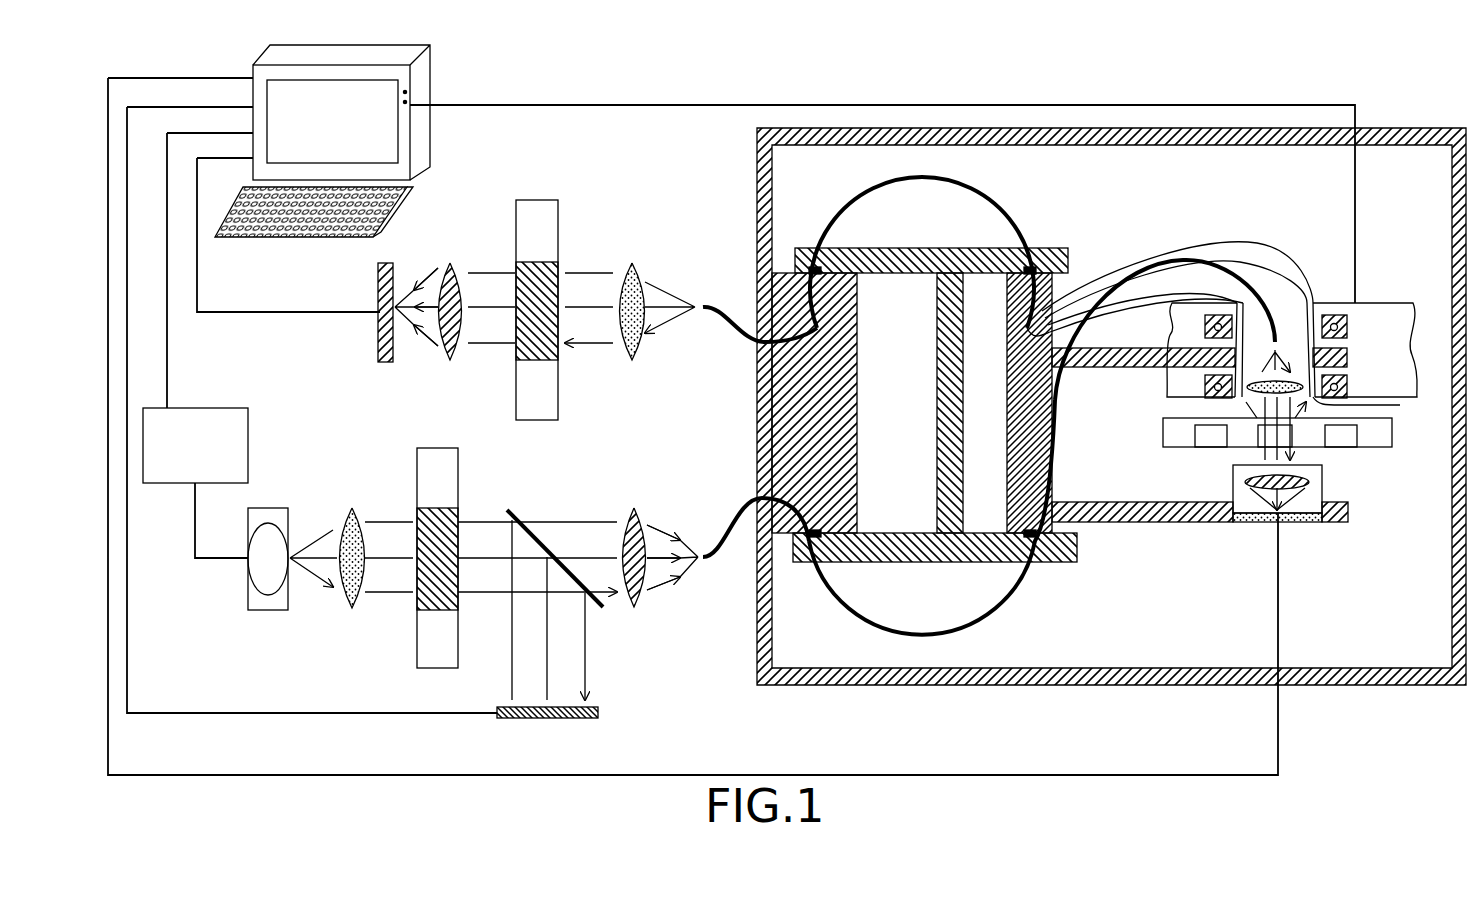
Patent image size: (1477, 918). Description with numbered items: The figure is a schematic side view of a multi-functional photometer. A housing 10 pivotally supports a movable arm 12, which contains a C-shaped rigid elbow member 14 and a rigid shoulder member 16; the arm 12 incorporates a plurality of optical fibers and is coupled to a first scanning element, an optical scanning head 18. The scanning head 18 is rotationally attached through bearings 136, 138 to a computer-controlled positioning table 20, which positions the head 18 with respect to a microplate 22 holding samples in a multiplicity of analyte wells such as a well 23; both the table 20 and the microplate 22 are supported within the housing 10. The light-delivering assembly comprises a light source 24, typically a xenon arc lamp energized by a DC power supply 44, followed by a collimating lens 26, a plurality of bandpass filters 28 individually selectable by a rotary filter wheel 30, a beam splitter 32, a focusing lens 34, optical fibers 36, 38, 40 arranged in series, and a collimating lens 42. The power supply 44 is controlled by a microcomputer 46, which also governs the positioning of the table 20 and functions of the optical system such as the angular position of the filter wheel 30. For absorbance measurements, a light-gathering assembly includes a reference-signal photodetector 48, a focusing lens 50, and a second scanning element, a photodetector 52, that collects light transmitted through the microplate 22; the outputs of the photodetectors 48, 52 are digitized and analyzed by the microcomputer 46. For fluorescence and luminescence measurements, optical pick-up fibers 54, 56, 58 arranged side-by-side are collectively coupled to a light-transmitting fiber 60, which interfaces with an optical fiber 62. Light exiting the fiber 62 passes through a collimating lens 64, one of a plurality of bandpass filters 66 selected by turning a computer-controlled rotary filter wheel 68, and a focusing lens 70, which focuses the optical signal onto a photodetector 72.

The housing 10 is at (1405, 127).
The movable arm 12 is at (1067, 652).
The elbow member 14 is at (1160, 530).
The shoulder member 16 is at (916, 242).
The optical scanning head 18 is at (1285, 299).
The positioning table 20 is at (1378, 303).
The microplate 22 is at (1400, 449).
The well 23 is at (1268, 435).
The light source 24 is at (283, 508).
The collimating lens 26 is at (358, 512).
The bandpass filters 28 is at (459, 512).
The rotary filter wheel 30 is at (438, 448).
The beam splitter 32 is at (515, 512).
The focusing lens 34 is at (636, 510).
The optical fiber 36 is at (743, 503).
The optical fiber 38 is at (852, 608).
The optical fiber 40 is at (1167, 260).
The collimating lens 42 is at (1374, 415).
The DC power supply 44 is at (215, 408).
The microcomputer 46 is at (432, 103).
The reference-signal photodetector 48 is at (568, 720).
The focusing lens 50 is at (1306, 483).
The photodetector 52 is at (1253, 523).
The optical pick-up fiber 54 is at (1077, 305).
The optical pick-up fiber 56 is at (1286, 272).
The optical pick-up fiber 58 is at (1212, 288).
The light-transmitting fiber 60 is at (993, 203).
The optical fiber 62 is at (728, 330).
The collimating lens 64 is at (638, 268).
The bandpass filters 66 is at (565, 270).
The rotary filter wheel 68 is at (538, 201).
The focusing lens 70 is at (455, 265).
The photodetector 72 is at (390, 262).
The bearing 136 is at (1352, 318).
The bearing 138 is at (1347, 378).